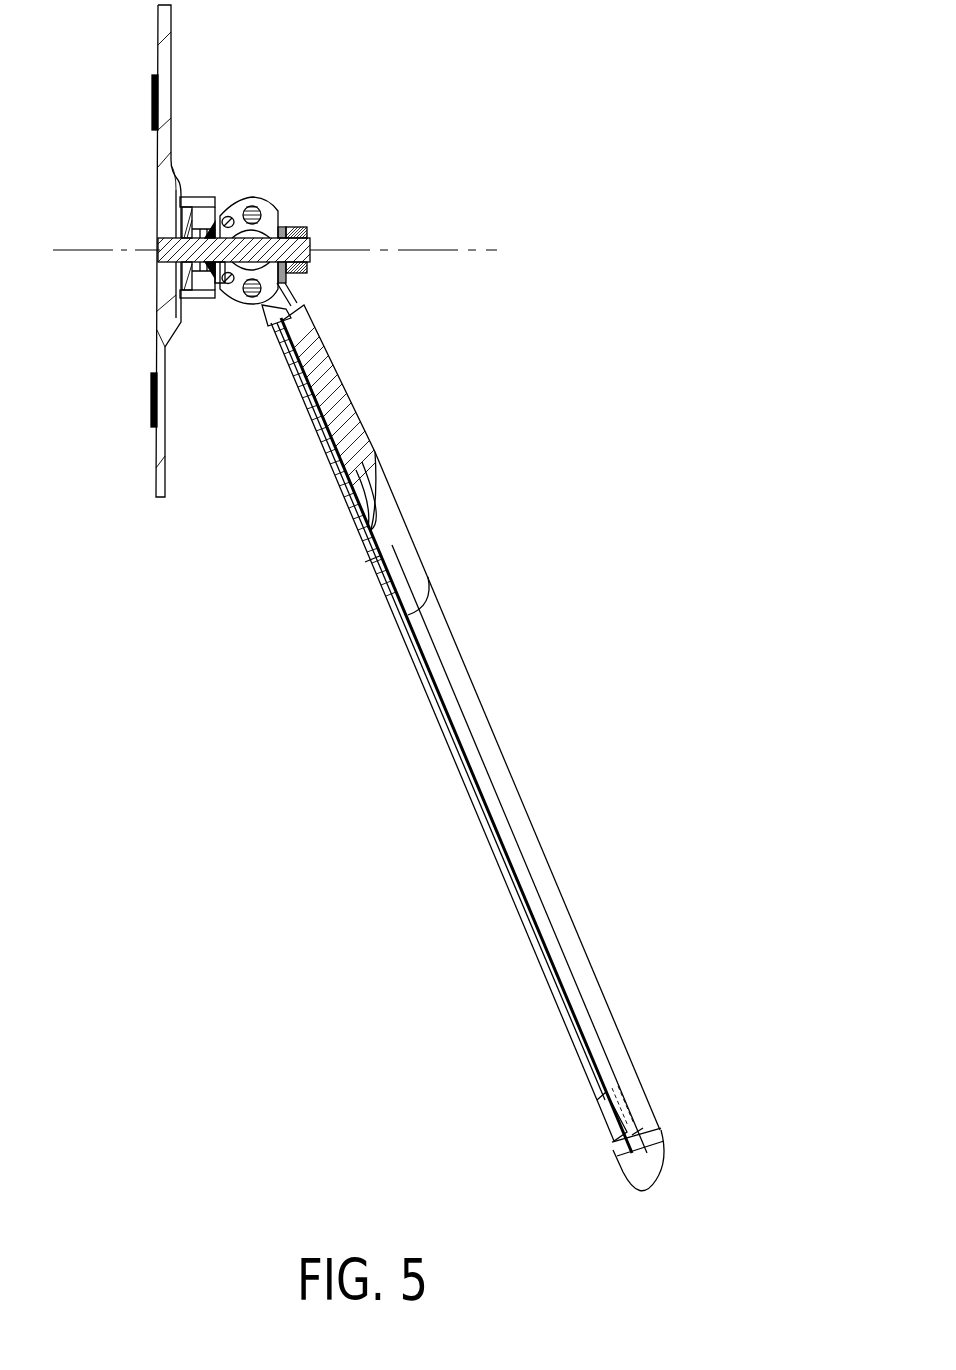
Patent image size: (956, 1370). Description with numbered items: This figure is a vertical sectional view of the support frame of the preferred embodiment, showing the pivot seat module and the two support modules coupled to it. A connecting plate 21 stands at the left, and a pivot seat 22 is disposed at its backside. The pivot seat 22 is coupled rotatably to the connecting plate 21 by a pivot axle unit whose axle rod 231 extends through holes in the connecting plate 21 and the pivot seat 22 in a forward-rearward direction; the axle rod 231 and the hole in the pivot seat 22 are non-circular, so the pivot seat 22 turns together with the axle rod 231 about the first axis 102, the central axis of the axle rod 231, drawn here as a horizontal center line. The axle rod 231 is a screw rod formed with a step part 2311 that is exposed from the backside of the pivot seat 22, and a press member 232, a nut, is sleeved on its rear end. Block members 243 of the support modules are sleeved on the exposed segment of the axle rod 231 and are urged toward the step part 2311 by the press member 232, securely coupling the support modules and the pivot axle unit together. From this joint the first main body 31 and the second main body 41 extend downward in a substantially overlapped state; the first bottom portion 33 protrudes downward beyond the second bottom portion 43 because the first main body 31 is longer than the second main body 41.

The connecting plate 21 is at (172, 52).
The pivot seat 22 is at (200, 198).
The axle rod 231 is at (160, 245).
The step part 2311 is at (222, 285).
The press member 232 is at (306, 231).
The clamp block 243 is at (267, 210).
The first axis 102 is at (440, 254).
The first main body 31 is at (341, 398).
The second main body 41 is at (323, 438).
The second bottom portion 43 is at (594, 1122).
The first bottom portion 33 is at (621, 1184).